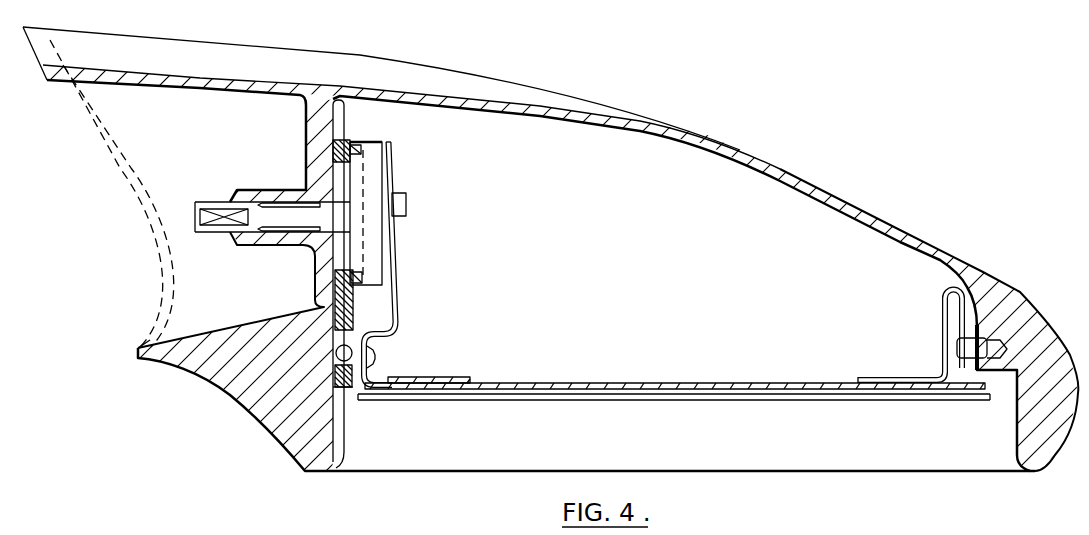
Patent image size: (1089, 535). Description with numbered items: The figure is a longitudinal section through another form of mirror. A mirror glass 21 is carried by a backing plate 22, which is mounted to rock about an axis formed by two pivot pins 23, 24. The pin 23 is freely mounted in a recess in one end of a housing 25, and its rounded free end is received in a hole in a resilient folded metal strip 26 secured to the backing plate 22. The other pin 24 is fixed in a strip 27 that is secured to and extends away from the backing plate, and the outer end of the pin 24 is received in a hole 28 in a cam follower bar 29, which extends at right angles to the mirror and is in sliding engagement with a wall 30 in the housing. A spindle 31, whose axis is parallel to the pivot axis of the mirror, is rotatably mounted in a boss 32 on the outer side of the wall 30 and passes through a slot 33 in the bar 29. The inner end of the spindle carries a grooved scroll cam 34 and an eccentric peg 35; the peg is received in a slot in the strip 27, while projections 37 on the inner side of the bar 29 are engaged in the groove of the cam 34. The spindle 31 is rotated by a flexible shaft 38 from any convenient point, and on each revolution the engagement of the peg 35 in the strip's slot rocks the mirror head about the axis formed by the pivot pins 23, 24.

The mirror glass 21 is at (636, 397).
The backing plate 22 is at (678, 384).
The pivot pin 23 is at (987, 349).
The pivot pin 24 is at (378, 356).
The housing 25 is at (780, 172).
The resilient folded metal strip 26 is at (962, 290).
The strip 27 is at (393, 292).
The hole 28 is at (337, 347).
The cam follower bar 29 is at (345, 293).
The wall 30 is at (320, 406).
The spindle 31 is at (277, 215).
The boss 32 is at (270, 187).
The slot 33 is at (345, 180).
The grooved scroll cam 34 is at (368, 153).
The eccentric peg 35 is at (406, 200).
The projections 37 is at (352, 147).
The flexible shaft 38 is at (195, 219).